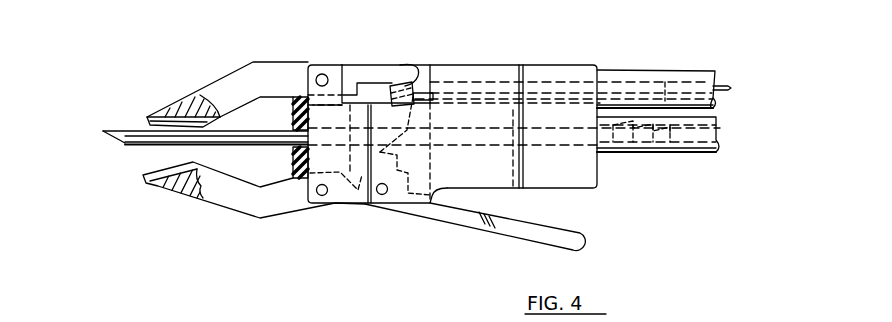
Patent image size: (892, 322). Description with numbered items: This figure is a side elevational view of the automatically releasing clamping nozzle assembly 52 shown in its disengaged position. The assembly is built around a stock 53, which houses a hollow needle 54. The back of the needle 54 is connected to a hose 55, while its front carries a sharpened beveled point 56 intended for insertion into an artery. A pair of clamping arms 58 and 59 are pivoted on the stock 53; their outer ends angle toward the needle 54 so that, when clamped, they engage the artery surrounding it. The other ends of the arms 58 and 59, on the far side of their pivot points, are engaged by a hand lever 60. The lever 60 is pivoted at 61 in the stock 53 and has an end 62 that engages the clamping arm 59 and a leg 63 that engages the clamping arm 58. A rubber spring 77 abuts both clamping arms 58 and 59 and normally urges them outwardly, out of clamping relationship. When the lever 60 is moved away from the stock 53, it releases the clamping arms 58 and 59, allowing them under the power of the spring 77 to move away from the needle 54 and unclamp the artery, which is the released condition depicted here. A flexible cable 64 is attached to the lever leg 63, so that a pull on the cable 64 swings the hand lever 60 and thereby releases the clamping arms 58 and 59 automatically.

The automatically releasing clamping nozzle assembly 52 is at (458, 66).
The stock 53 is at (508, 74).
The hollow needle 54 is at (275, 140).
The hose 55 is at (662, 152).
The sharpened beveled point 56 is at (108, 140).
The clamping arm 58 is at (233, 80).
The clamping arm 59 is at (228, 197).
The hand lever 60 is at (538, 232).
The pivot 61 is at (382, 195).
The lever end 62 is at (408, 110).
The lever leg 63 is at (405, 83).
The flexible cable 64 is at (420, 92).
The rubber spring 77 is at (292, 120).